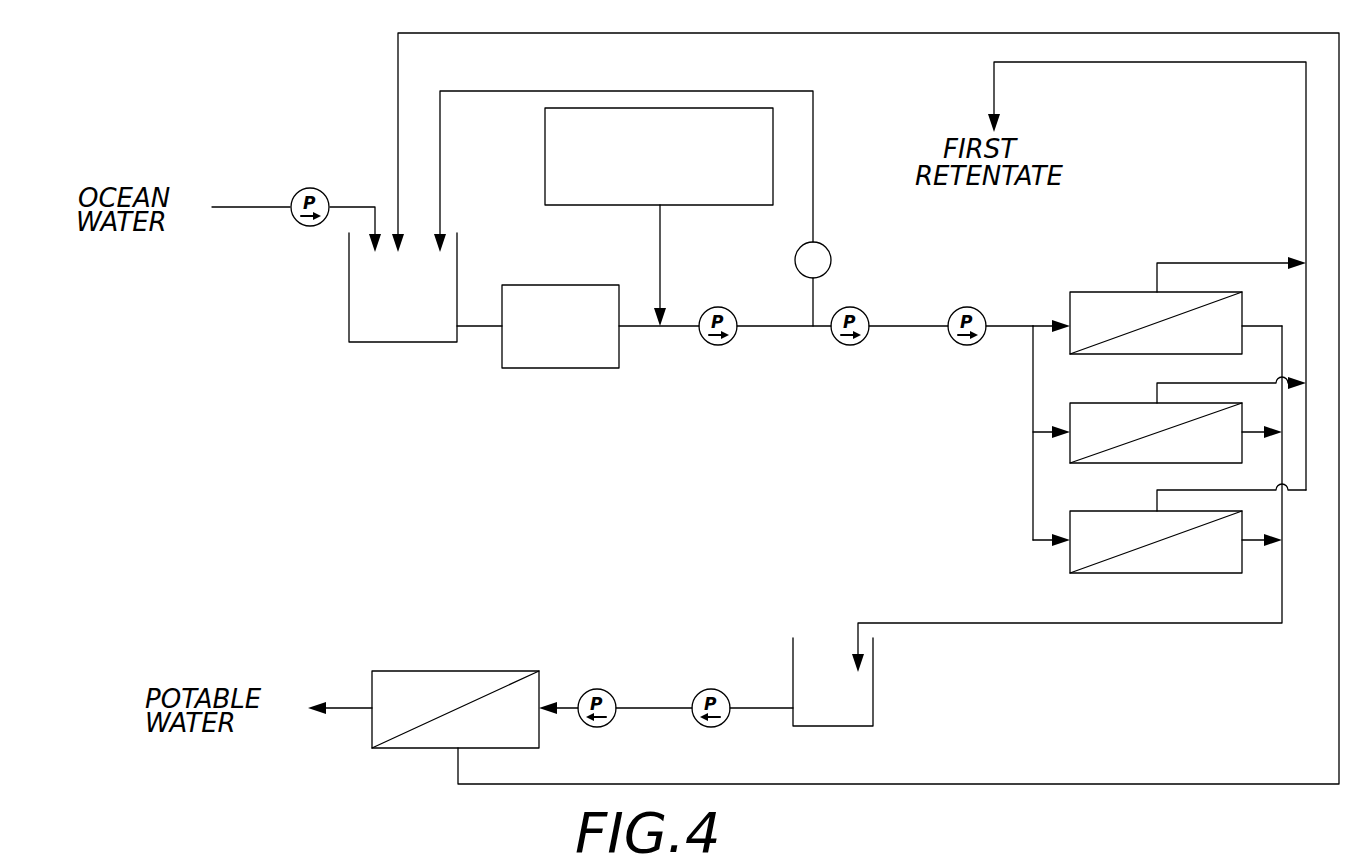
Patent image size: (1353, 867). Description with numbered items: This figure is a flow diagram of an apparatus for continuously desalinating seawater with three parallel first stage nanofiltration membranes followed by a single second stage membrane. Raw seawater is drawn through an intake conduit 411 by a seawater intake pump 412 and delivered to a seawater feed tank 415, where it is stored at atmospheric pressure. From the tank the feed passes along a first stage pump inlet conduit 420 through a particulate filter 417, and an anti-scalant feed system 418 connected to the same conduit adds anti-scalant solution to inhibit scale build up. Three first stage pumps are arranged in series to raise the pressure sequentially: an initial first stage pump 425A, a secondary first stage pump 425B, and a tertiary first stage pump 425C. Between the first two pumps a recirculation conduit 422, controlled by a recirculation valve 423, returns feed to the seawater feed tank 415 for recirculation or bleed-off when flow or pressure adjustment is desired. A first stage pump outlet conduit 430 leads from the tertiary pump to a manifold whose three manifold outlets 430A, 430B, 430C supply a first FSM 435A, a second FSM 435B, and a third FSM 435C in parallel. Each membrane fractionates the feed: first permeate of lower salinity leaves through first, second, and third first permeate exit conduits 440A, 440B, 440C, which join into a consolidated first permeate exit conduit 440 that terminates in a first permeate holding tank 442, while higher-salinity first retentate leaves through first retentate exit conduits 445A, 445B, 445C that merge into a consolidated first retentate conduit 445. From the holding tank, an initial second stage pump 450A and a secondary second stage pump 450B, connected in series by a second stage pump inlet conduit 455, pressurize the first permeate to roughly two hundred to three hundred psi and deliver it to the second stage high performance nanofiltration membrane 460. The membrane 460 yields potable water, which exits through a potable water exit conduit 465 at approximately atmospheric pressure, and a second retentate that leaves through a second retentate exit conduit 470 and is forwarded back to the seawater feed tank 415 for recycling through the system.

The intake conduit 411 is at (263, 205).
The seawater intake pump 412 is at (299, 227).
The seawater feed tank 415 is at (349, 327).
The particulate filter 417 is at (556, 368).
The anti-scalant feed system 418 is at (598, 205).
The first stage pump inlet conduit 420 is at (470, 330).
The recirculation conduit 422 is at (813, 142).
The recirculation valve 423 is at (826, 247).
The initial first stage pump 425A is at (728, 343).
The secondary first stage pump 425B is at (847, 344).
The tertiary first stage pump 425C is at (960, 344).
The first stage pump outlet conduit 430 is at (1012, 322).
The manifold outlet 430A is at (1043, 327).
The manifold outlet 430B is at (1043, 434).
The manifold outlet 430C is at (1043, 542).
The first FSM 435A is at (1148, 327).
The second FSM 435B is at (1148, 437).
The third FSM 435C is at (1148, 546).
The consolidated first permeate exit conduit 440 is at (1130, 623).
The first first permeate exit conduit 440A is at (1255, 322).
The second first permeate exit conduit 440B is at (1257, 430).
The third first permeate exit conduit 440C is at (1255, 542).
The first permeate holding tank 442 is at (873, 692).
The consolidated first retentate conduit 445 is at (1213, 62).
The first retentate exit conduit 445A is at (1222, 262).
The first retentate exit conduit 445B is at (1260, 386).
The first retentate exit conduit 445C is at (1248, 490).
The initial second stage pump 450A is at (719, 690).
The secondary second stage pump 450B is at (598, 690).
The second stage pump inlet conduit 455 is at (562, 712).
The second stage high performance nanofiltration membrane 460 is at (430, 706).
The potable water outlet 465 is at (344, 708).
The second retentate exit conduit 470 is at (505, 33).